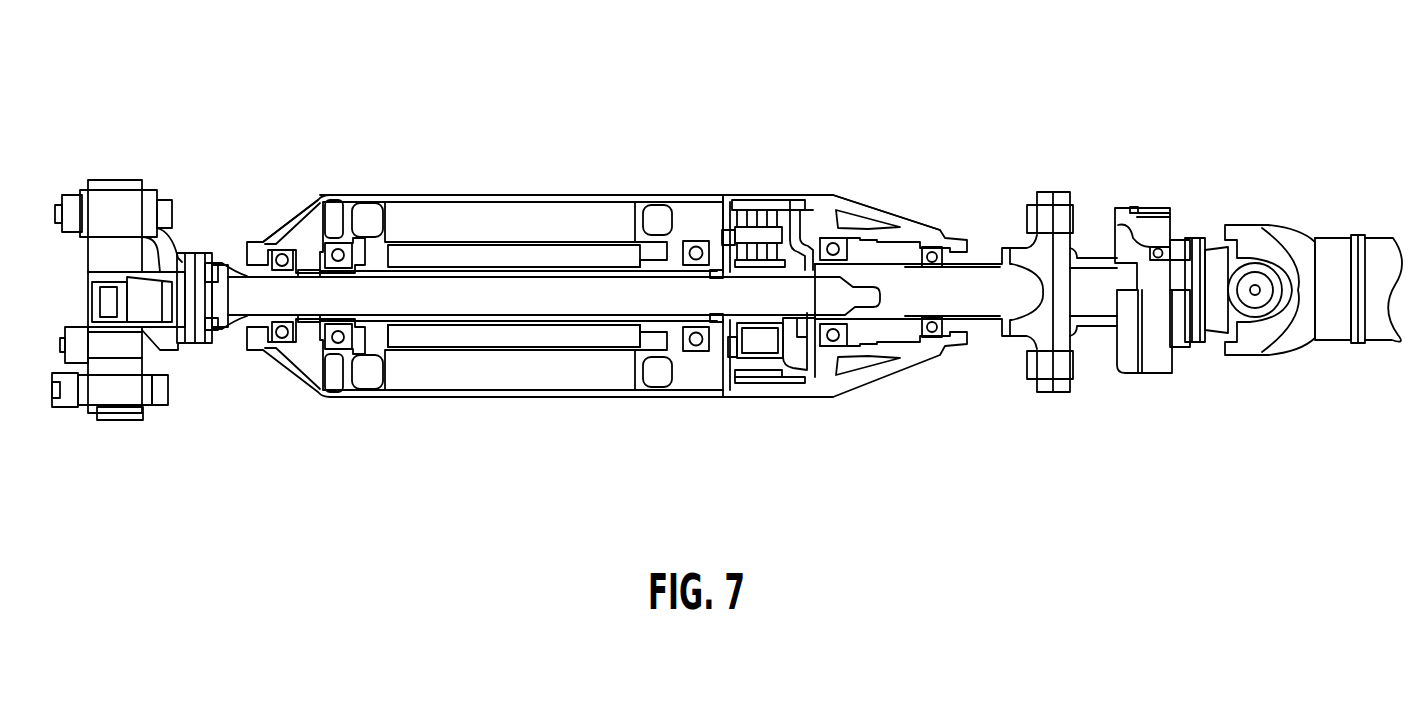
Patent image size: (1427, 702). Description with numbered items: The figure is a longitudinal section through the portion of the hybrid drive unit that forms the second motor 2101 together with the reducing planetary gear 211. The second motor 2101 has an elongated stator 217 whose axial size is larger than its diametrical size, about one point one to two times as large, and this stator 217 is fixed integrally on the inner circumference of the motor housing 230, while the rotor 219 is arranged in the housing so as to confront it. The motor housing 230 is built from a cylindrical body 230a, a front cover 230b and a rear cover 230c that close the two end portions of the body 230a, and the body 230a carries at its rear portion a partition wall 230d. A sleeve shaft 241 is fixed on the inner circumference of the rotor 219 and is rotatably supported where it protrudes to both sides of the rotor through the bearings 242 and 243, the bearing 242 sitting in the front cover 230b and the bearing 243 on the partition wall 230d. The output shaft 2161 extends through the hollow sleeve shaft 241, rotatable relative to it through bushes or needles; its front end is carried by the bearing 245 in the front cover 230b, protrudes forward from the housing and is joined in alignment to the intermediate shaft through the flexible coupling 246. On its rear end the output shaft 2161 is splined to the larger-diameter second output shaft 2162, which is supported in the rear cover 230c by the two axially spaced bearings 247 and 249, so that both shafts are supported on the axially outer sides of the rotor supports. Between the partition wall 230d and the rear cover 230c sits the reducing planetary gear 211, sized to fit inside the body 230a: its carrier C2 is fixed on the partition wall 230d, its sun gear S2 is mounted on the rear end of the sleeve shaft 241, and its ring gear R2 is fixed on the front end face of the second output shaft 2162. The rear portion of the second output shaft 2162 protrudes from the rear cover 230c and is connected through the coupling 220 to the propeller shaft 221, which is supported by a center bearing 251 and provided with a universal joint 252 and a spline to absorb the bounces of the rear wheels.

The second motor 2101 is at (520, 96).
The reducing planetary gear 211 is at (742, 104).
The motor housing 230 is at (400, 168).
The cylindrical body 230a is at (578, 195).
The front cover 230b is at (327, 196).
The rear cover 230c is at (905, 228).
The partition wall 230d is at (700, 207).
The stator 217 is at (442, 213).
The rotor 219 is at (505, 250).
The sleeve shaft 241 is at (490, 322).
The output shaft 2161 is at (555, 298).
The second output shaft 2162 is at (893, 300).
The bearing 242 is at (338, 343).
The bearing 243 is at (697, 340).
The bearing 245 is at (282, 337).
The bearing 247 is at (833, 342).
The bearing 249 is at (935, 335).
The sun gear S2 is at (753, 263).
The ring gear R2 is at (795, 383).
The carrier C2 is at (763, 355).
The flexible coupling 246 is at (122, 420).
The coupling 220 is at (1055, 196).
The propeller shaft 221 is at (1331, 210).
The center bearing 251 is at (1155, 360).
The universal joint 252 is at (1258, 343).